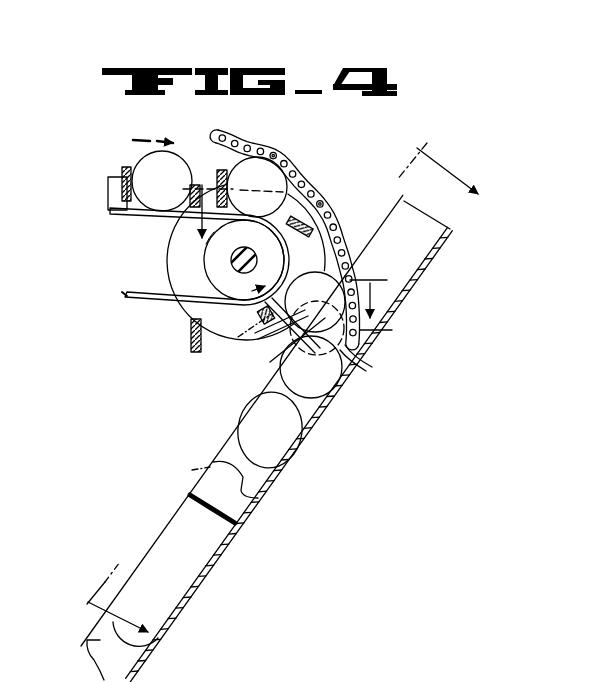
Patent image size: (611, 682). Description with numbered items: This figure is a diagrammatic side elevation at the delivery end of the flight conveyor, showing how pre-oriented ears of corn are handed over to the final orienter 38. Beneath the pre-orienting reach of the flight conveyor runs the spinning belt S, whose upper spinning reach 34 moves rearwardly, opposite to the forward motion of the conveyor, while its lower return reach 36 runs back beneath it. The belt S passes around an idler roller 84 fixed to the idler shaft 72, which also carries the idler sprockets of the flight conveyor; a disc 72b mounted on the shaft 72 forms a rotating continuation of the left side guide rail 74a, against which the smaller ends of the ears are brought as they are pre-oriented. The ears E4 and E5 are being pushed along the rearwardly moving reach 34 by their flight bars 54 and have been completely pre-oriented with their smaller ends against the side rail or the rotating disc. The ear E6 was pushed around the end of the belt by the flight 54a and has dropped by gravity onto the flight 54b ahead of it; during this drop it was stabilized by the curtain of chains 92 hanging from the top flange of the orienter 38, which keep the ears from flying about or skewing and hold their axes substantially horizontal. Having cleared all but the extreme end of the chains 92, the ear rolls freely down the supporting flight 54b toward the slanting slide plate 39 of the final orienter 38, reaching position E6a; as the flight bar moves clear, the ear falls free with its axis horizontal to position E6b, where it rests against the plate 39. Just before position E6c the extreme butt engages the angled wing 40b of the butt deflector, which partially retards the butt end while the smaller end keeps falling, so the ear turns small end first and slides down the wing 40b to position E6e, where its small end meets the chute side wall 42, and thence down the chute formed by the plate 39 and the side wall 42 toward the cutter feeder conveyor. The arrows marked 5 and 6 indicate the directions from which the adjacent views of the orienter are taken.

The left side guide rail 74a is at (112, 174).
The ear of corn E4 is at (177, 160).
The flight bar 54 is at (243, 144).
The ear of corn E5 is at (253, 163).
The curtain of chains 92 is at (276, 155).
The conveyor flight 54a is at (322, 206).
The section line 5- 5 is at (280, 383).
The final orienter 38 is at (455, 231).
The slide plate 39 is at (421, 275).
The section line 6- 6 is at (287, 242).
The upper spinning reach 34 is at (141, 218).
The disc 72b is at (172, 244).
The idler roller 84 is at (206, 243).
The idler shaft 72 is at (232, 265).
The spinning belt S is at (120, 296).
The return reach 36 is at (160, 300).
The supporting flight 54b is at (243, 330).
The ear of corn E6 is at (367, 328).
The ear position E6a is at (353, 350).
The ear position E6b is at (362, 370).
The wing of butt deflector 40b is at (312, 407).
The ear position E6c is at (318, 428).
The ear position E6e is at (258, 500).
The chute side wall 42 is at (124, 663).